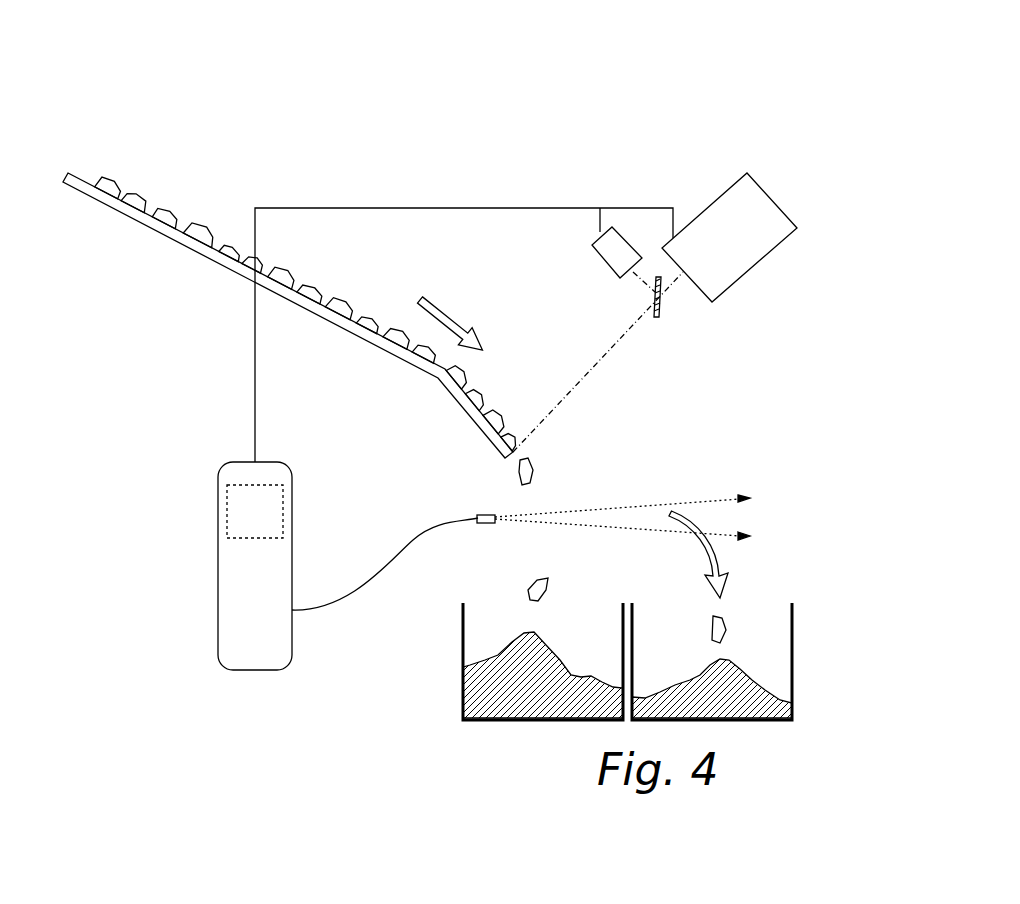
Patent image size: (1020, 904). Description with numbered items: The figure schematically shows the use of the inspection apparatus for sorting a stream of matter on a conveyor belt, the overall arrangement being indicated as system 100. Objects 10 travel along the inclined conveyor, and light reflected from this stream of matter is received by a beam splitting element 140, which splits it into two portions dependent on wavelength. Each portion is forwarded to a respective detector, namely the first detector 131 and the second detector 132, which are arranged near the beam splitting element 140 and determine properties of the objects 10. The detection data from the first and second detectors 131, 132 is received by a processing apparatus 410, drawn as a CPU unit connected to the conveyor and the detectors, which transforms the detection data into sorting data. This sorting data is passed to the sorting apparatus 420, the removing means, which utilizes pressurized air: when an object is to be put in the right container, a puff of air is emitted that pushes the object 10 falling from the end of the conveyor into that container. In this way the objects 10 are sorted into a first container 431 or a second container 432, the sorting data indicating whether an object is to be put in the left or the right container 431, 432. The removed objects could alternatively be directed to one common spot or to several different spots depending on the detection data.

The objects 10 is at (105, 178).
The sorting apparatus 100 is at (760, 116).
The first detector 131 is at (632, 248).
The second detector 132 is at (760, 210).
The beam splitting element 140 is at (658, 312).
The processing apparatus 410 is at (237, 490).
The sorting apparatus 420 is at (478, 513).
The first container 431 is at (463, 648).
The second container 432 is at (794, 640).